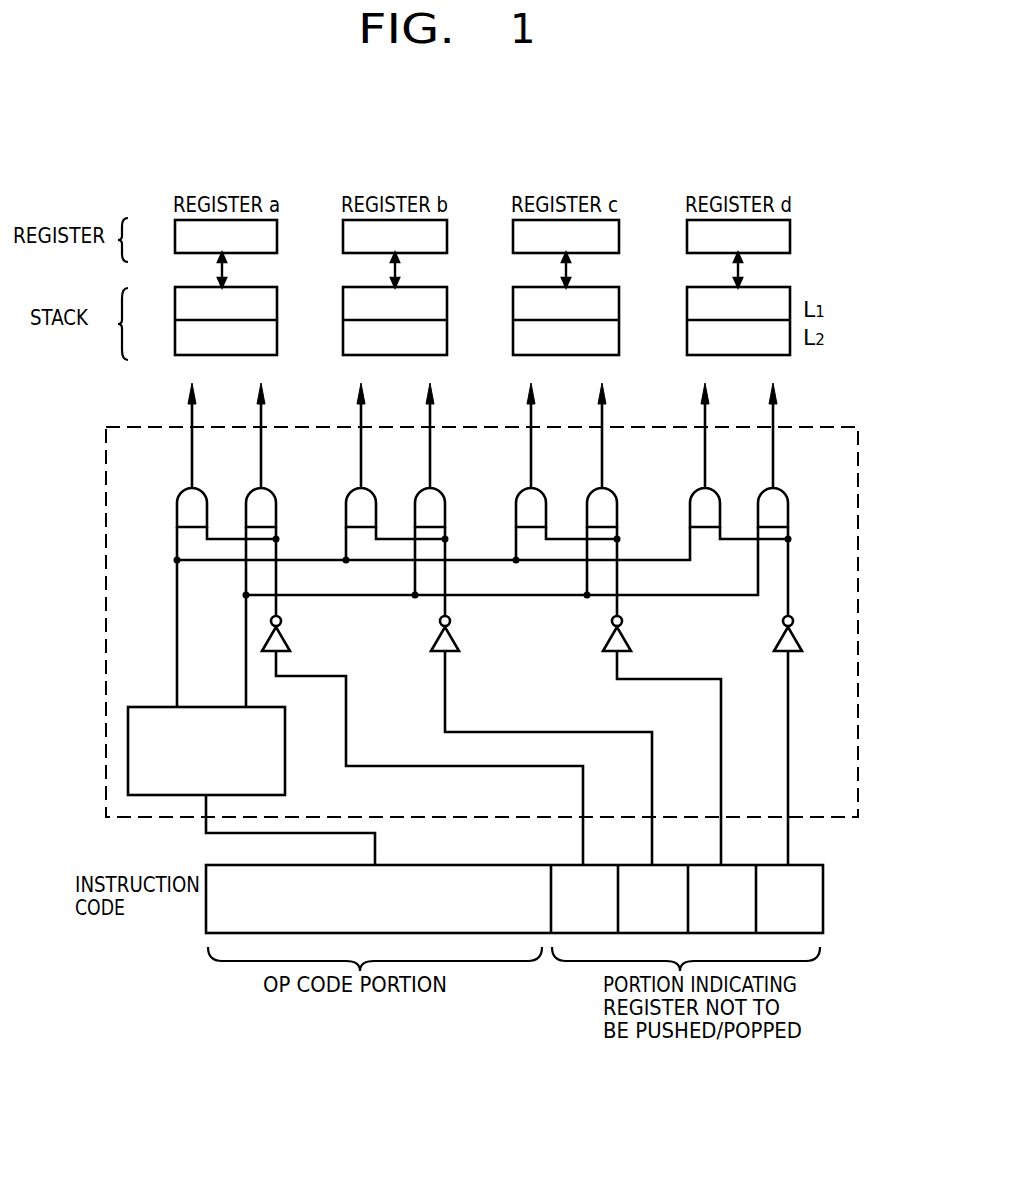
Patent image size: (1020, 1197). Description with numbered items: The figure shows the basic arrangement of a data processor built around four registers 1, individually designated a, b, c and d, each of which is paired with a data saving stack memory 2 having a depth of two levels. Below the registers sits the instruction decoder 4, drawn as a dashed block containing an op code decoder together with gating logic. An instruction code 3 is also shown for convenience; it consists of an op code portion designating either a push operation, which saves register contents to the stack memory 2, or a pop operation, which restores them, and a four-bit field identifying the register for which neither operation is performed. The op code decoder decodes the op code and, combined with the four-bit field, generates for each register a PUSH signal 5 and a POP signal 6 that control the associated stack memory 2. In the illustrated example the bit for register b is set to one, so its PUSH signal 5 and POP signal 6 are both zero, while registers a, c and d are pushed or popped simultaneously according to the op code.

The registers 1 is at (177, 228).
The stack memories 2 is at (177, 297).
The instruction code 3 is at (481, 865).
The instruction decoder 4 is at (104, 650).
The PUSH signal 5 is at (194, 413).
The POP signal 6 is at (262, 410).